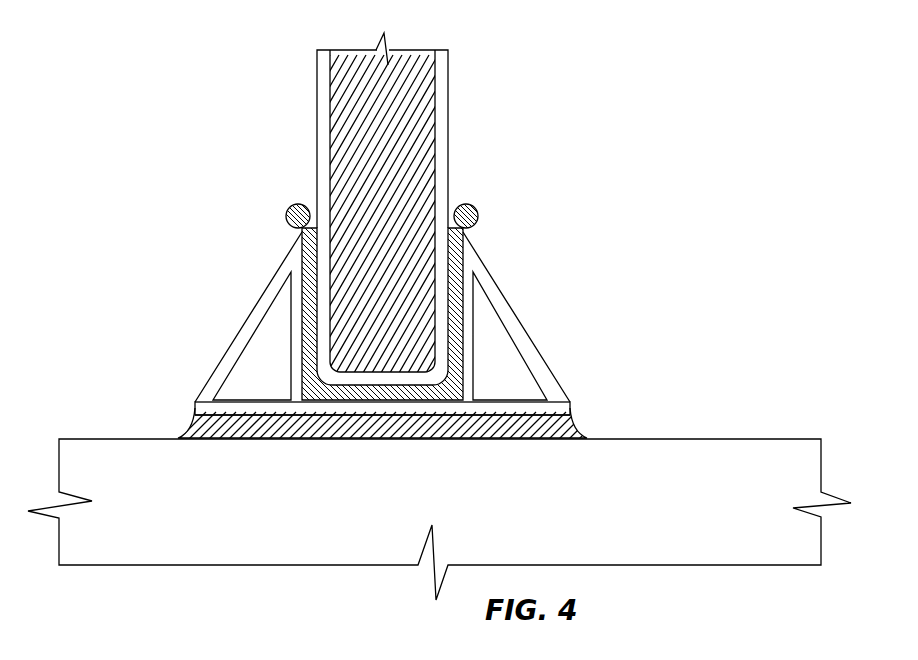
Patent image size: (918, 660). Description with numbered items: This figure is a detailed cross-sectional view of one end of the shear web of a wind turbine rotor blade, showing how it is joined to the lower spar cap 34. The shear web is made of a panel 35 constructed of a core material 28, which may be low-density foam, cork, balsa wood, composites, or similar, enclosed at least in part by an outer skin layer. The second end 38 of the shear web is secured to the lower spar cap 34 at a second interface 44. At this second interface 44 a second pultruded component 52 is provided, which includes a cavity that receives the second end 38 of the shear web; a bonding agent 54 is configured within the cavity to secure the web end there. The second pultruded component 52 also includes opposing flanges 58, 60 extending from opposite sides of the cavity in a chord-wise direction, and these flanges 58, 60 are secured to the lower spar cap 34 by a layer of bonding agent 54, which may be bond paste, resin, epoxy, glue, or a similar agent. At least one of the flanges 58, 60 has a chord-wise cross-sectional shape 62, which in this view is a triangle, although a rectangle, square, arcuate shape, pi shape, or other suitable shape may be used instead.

The core material 28 is at (355, 132).
The panel 35 is at (350, 103).
The second end 38 is at (373, 372).
The second interface 44 is at (640, 123).
The second pultruded component 52 is at (513, 296).
The bonding agent 54 is at (463, 205).
The flange 58 is at (540, 405).
The flange 60 is at (225, 406).
The chord-wise cross-sectional shape 62 is at (236, 346).
The lower spar cap 34 is at (713, 439).